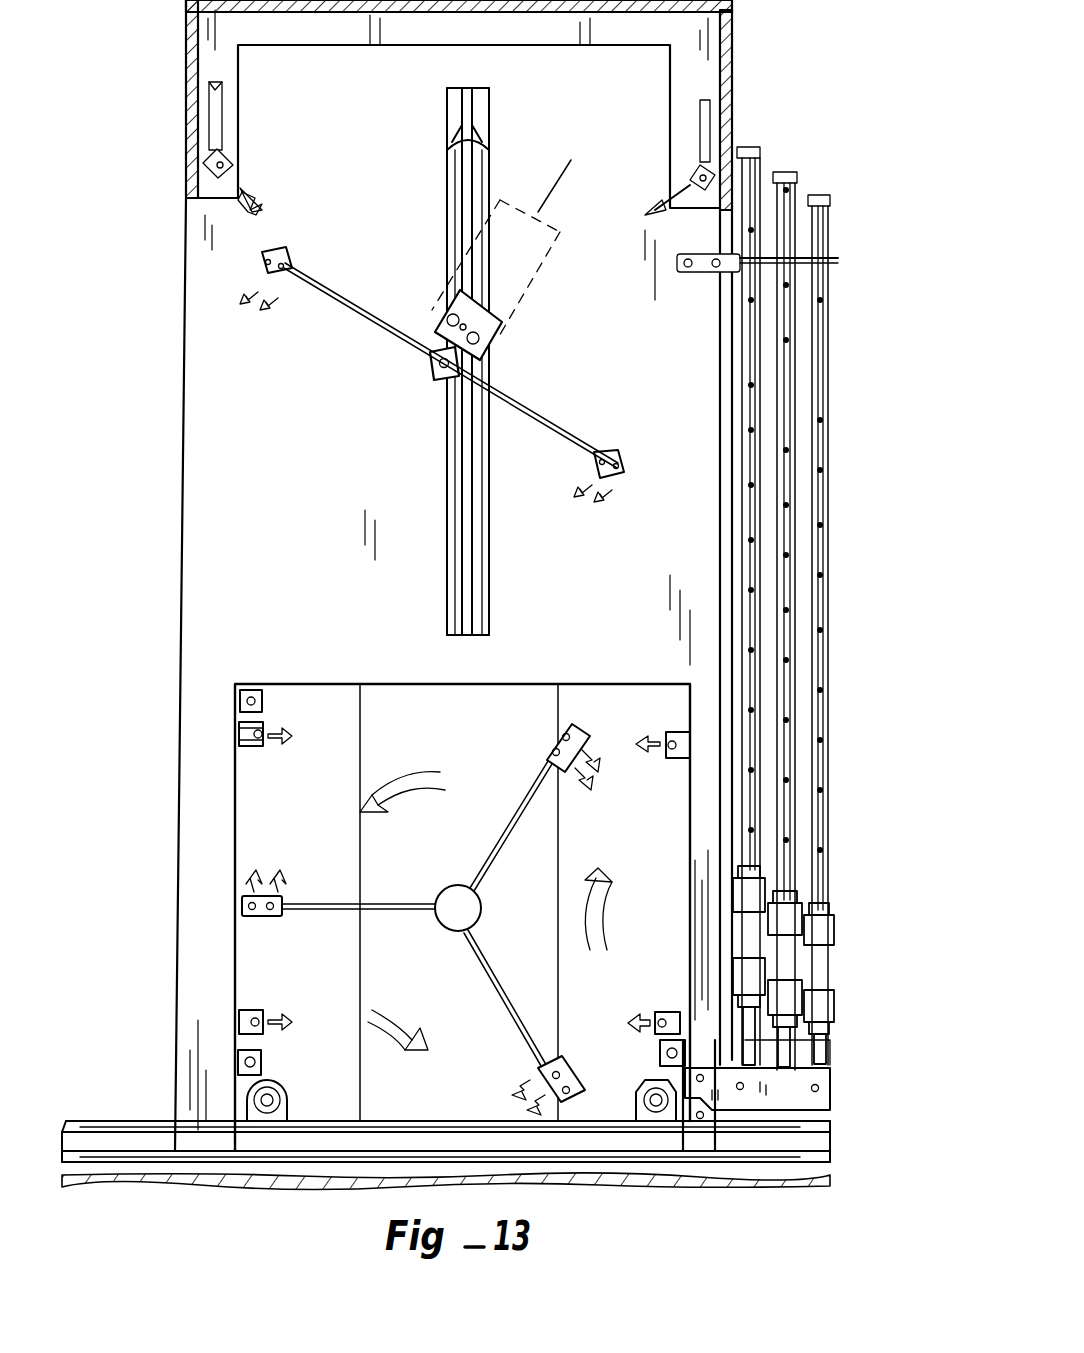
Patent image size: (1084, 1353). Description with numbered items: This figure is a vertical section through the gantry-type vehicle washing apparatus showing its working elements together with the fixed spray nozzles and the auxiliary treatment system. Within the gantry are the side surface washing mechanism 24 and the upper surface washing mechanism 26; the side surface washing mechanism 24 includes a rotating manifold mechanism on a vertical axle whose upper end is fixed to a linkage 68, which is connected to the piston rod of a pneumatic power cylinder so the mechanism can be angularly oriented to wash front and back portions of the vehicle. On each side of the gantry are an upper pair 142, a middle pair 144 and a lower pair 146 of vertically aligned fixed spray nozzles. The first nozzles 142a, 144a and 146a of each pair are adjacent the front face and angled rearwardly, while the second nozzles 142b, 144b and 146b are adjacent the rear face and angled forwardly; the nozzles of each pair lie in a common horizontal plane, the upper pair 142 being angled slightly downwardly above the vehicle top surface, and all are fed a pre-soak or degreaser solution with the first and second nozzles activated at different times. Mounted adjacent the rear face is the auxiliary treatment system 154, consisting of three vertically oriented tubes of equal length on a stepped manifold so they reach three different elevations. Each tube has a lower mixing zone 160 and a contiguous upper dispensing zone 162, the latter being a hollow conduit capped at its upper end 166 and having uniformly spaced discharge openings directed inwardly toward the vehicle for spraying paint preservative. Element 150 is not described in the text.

The side surface washing mechanism 24 is at (505, 884).
The upper surface washing mechanism 26 is at (412, 418).
The linkage 68 is at (752, 552).
The upper pair of fixed spray nozzles 142 is at (248, 158).
The first nozzle of upper pair 142a is at (712, 178).
The second nozzle of upper pair 142b is at (205, 168).
The middle pair of fixed spray nozzles 144 is at (298, 698).
The first nozzle of middle pair 144a is at (668, 742).
The second nozzle of middle pair 144b is at (254, 748).
The lower pair of fixed spray nozzles 146 is at (650, 995).
The first nozzle of lower pair 146a is at (645, 1012).
The second nozzle of lower pair 146b is at (265, 1020).
The roller bracket 150 is at (238, 1062).
The auxiliary treatment system 154 is at (818, 120).
The lower mixing zone 160 is at (840, 960).
The upper dispensing zone 162 is at (878, 442).
The upper end 166 is at (760, 151).